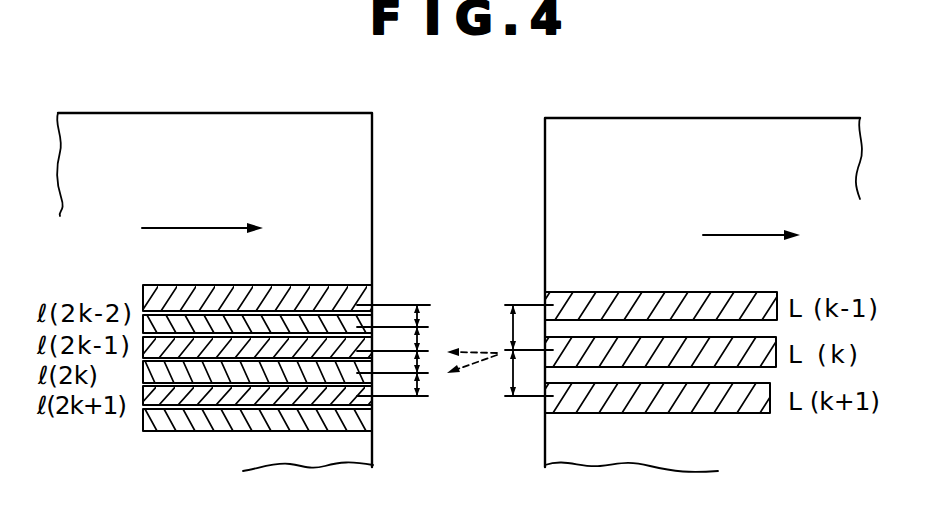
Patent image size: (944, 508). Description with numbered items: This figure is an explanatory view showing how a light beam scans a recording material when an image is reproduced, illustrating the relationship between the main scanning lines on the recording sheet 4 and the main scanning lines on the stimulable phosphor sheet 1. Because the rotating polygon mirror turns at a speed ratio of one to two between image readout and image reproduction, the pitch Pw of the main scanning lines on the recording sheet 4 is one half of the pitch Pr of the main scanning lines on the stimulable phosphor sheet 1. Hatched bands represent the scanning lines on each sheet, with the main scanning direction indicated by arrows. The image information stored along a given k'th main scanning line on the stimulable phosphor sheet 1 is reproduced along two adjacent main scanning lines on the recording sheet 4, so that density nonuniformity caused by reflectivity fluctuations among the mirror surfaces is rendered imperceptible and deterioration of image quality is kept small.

The recording sheet 4 is at (283, 138).
The stimulable phosphor sheet 1 is at (676, 136).
The pitch of the main scanning lines on the recording sheet Pw is at (420, 318).
The pitch of the main scanning lines on the stimulable phosphor sheet Pr is at (500, 350).